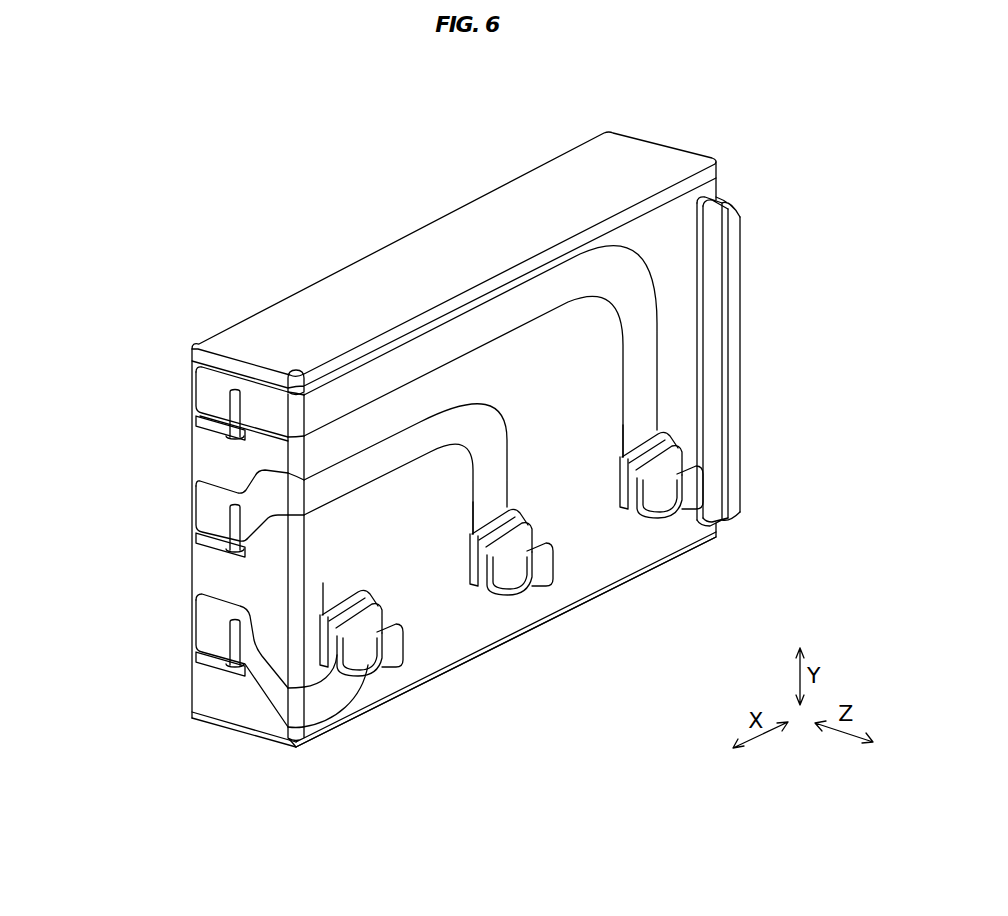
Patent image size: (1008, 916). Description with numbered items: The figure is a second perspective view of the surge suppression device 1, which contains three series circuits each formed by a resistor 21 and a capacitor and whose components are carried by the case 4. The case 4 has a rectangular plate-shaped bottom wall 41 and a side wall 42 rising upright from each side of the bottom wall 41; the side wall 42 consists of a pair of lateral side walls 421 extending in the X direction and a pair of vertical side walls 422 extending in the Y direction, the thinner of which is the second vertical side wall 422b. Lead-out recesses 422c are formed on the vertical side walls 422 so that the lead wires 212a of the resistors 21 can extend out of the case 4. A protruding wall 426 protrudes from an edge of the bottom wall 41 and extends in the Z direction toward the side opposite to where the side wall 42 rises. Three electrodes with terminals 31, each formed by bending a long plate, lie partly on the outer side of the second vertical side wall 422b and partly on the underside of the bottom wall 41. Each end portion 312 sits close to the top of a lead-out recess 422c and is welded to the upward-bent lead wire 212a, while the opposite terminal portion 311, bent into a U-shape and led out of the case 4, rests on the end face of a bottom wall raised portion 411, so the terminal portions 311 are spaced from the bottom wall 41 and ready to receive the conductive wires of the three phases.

The surge suppression device 1 is at (310, 172).
The case 4 is at (395, 262).
The bottom wall 41 is at (583, 545).
The side wall 42 is at (345, 290).
The lateral side wall 421 is at (458, 237).
The vertical side wall 422 is at (225, 573).
The second vertical side wall 422b is at (244, 551).
The lead-out recess 422c is at (215, 423).
The protruding wall 426 is at (740, 350).
The electrode with terminal 31 is at (614, 302).
The terminal portion 311 is at (385, 652).
The end portion 312 is at (215, 383).
The resistor 21 is at (205, 391).
The lead wire 212a is at (222, 418).
The bottom wall raised portion 411 is at (350, 603).